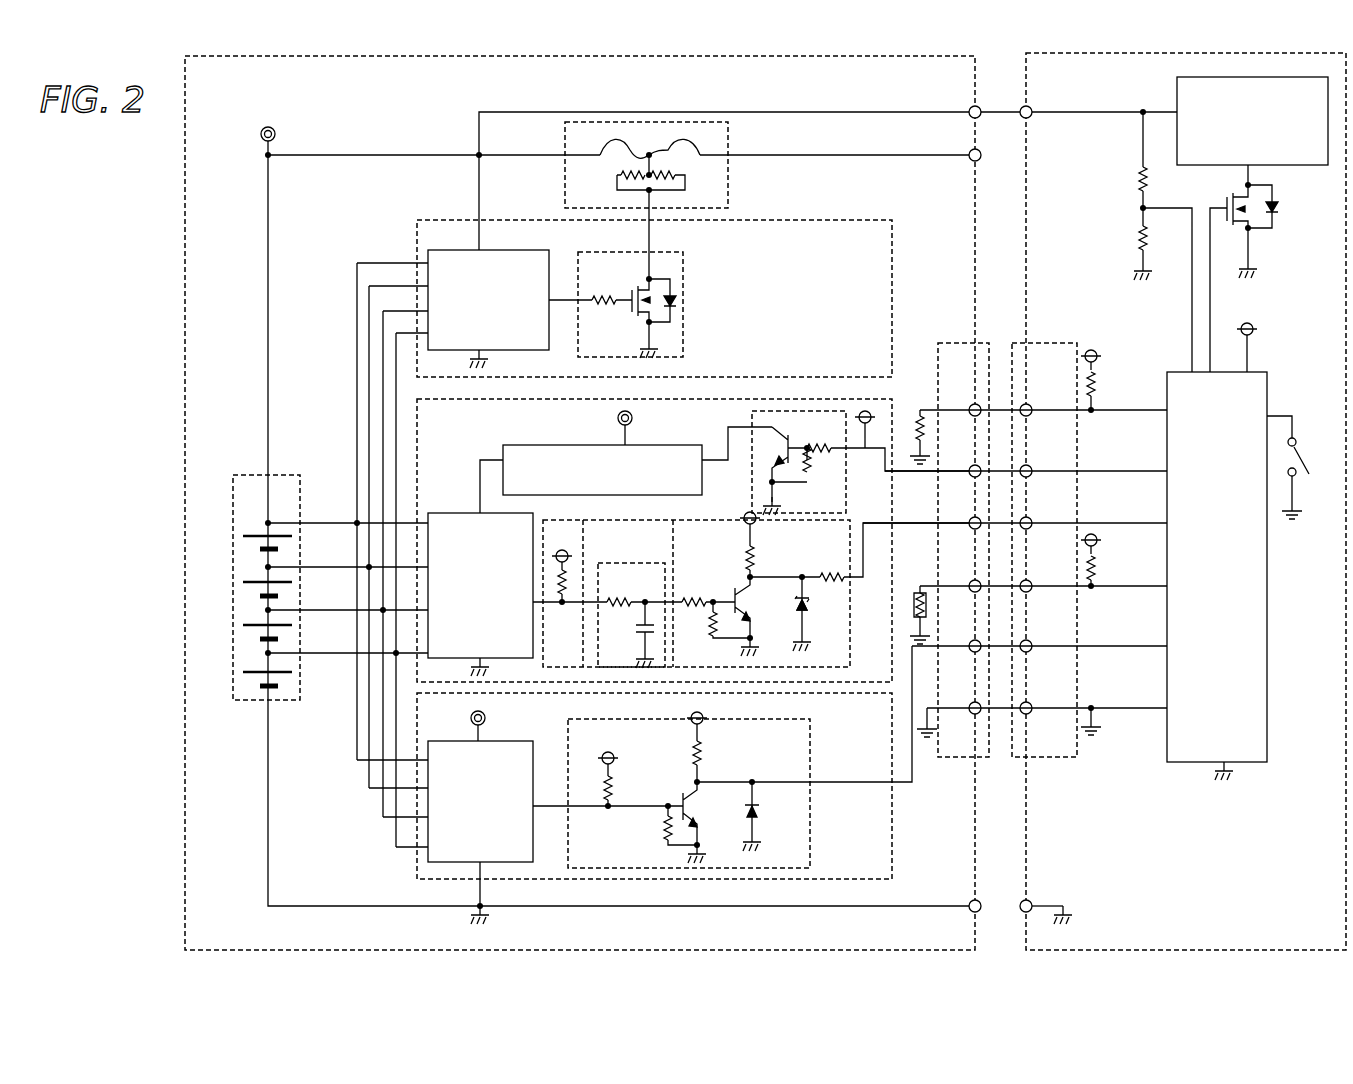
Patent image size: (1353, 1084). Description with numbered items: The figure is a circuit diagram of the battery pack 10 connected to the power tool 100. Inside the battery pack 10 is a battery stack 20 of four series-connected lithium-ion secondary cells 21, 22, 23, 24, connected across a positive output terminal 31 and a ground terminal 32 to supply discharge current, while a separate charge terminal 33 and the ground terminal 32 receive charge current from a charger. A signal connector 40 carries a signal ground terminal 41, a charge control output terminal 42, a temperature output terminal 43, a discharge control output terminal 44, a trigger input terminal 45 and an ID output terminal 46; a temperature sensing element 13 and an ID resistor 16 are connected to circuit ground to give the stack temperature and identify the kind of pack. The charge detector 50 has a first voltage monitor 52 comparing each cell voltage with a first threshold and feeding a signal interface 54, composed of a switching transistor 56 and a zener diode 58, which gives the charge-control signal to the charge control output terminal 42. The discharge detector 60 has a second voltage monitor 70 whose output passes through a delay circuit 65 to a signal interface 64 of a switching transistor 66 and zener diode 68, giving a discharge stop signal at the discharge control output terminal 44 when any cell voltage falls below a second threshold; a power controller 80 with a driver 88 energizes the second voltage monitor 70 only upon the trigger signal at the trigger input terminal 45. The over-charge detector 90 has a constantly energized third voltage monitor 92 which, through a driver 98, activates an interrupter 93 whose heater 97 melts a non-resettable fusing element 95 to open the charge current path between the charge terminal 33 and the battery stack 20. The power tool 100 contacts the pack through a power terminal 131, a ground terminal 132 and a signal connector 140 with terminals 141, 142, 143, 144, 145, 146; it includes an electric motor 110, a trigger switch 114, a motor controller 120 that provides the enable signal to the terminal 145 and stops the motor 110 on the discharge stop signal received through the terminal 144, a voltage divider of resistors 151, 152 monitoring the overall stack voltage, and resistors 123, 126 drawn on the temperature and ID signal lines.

The battery pack 10 is at (580, 503).
The electric tool / motor device 100 is at (1186, 501).
The thermistor 13 is at (906, 600).
The resistor 16 is at (906, 424).
The battery 20 is at (248, 595).
The battery cell 21 is at (246, 680).
The battery cell 22 is at (246, 635).
The battery cell 23 is at (246, 591).
The battery cell 24 is at (246, 547).
The positive terminal 31 is at (959, 97).
The negative terminal 32 is at (958, 891).
The charge terminal 33 is at (959, 168).
The signal terminal block 40 is at (963, 550).
The terminal 41 is at (962, 718).
The terminal 42 is at (962, 655).
The terminal 43 is at (962, 595).
The terminal 44 is at (962, 533).
The terminal 45 is at (962, 480).
The terminal 46 is at (962, 420).
The charge detector 50 is at (664, 762).
The voltage monitor 52 is at (480, 801).
The output circuit 54 is at (722, 757).
The transistor 56 is at (674, 782).
The zener diode 58 is at (762, 810).
The discharge detector 60 is at (696, 540).
The output circuit 64 is at (754, 590).
The filter circuit 65 is at (631, 615).
The transistor 66 is at (730, 596).
The zener diode 68 is at (810, 608).
The voltage monitor 70 is at (480, 594).
The power controller 80 is at (602, 470).
The transistor circuit 88 is at (863, 463).
The over-charge detector 90 is at (654, 298).
The voltage monitor 92 is at (510, 309).
The fuse circuit 93 is at (646, 200).
The fuse 95 is at (672, 140).
The heater resistor 97 is at (680, 183).
The switching transistor 98 is at (630, 305).
The motor 110 is at (1252, 121).
The trigger switch 114 is at (1330, 430).
The motor controller 120 is at (1217, 576).
The pull-up resistor 123 is at (1111, 561).
The pull-up resistor 126 is at (1111, 381).
The positive terminal 131 is at (1043, 125).
The negative terminal 132 is at (1049, 896).
The signal terminal block 140 is at (1044, 550).
The terminal 141 is at (1042, 718).
The terminal 142 is at (1042, 655).
The terminal 143 is at (1042, 595).
The terminal 144 is at (1042, 533).
The terminal 145 is at (1042, 480).
The terminal 146 is at (1042, 420).
The resistor 151 is at (1118, 160).
The resistor 152 is at (1121, 242).